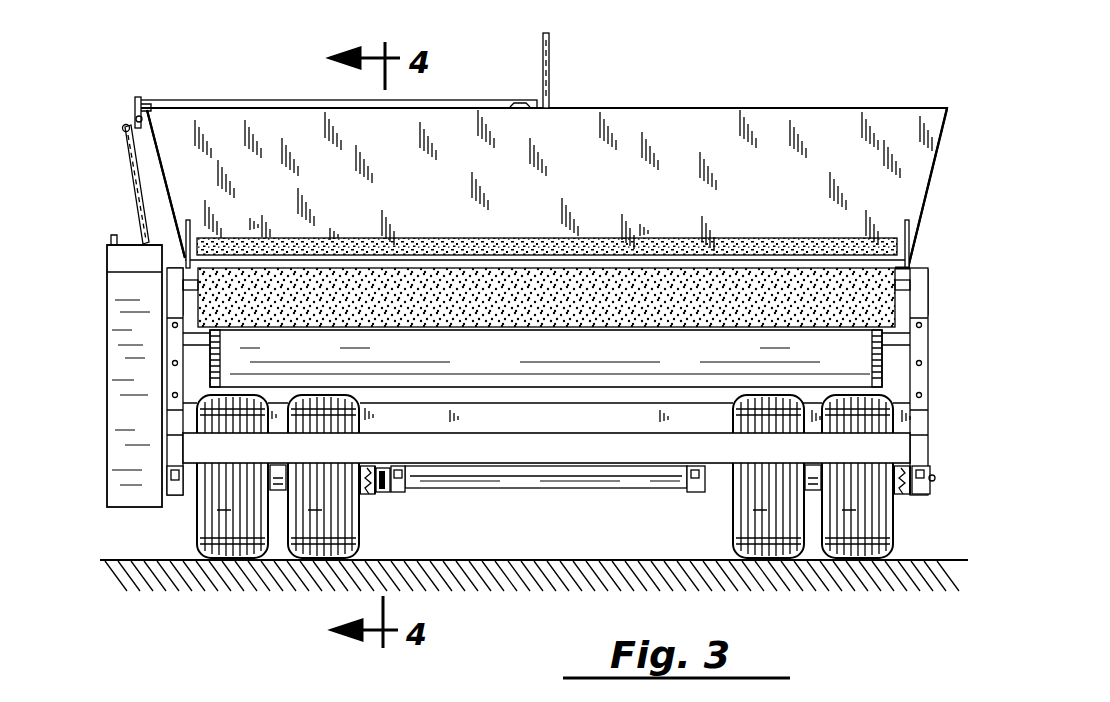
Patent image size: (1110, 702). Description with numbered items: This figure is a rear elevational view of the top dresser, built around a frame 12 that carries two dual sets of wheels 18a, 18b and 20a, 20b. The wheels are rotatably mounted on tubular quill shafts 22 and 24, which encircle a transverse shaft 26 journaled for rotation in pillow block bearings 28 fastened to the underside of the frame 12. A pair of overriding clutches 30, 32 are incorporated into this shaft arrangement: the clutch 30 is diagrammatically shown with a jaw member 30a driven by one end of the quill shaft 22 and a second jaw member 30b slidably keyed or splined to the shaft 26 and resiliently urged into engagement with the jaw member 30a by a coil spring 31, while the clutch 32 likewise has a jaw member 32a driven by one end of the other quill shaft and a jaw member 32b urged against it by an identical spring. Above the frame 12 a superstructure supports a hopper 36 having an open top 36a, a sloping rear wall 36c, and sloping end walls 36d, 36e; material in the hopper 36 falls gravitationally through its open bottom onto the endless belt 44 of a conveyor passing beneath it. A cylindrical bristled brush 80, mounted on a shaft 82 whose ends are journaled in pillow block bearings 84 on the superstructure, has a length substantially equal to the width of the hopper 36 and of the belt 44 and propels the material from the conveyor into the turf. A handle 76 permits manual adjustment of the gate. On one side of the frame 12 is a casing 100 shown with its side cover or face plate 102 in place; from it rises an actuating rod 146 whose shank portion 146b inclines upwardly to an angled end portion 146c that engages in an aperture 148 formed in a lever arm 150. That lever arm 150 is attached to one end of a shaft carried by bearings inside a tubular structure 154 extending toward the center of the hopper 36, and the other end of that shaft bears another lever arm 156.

The frame 12 is at (547, 381).
The wheel 18a is at (235, 540).
The wheel 18b is at (330, 540).
The wheel 20a is at (770, 540).
The wheel 20b is at (865, 540).
The quill shaft 22 is at (278, 474).
The quill shaft 24 is at (815, 474).
The transverse shaft 26 is at (533, 490).
The pillow block bearings 28 is at (176, 497).
The overriding clutch 30 is at (370, 500).
The jaw member 30a is at (364, 470).
The jaw member 30b is at (370, 468).
The coil spring 31 is at (382, 492).
The overriding clutch 32 is at (907, 502).
The jaw member 32a is at (897, 470).
The jaw member 32b is at (925, 468).
The hopper 36 is at (529, 156).
The open top 36a is at (688, 106).
The sloping rear wall 36c is at (563, 178).
The sloping end wall 36d is at (160, 176).
The sloping end wall 36e is at (931, 182).
The endless belt 44 is at (559, 366).
The handle 76 is at (637, 243).
The cylindrical bristled brush 80 is at (557, 307).
The shaft 82 is at (910, 266).
The pillow block bearings 84 is at (178, 250).
The casing 100 is at (130, 416).
The side cover 102 is at (107, 372).
The actuating rod 146 is at (125, 212).
The shank portion 146b is at (128, 128).
The angled end portion 146c is at (137, 120).
The aperture 148 is at (150, 121).
The lever arm 150 is at (143, 110).
The tubular structure 154 is at (303, 99).
The lever arm 156 is at (549, 57).